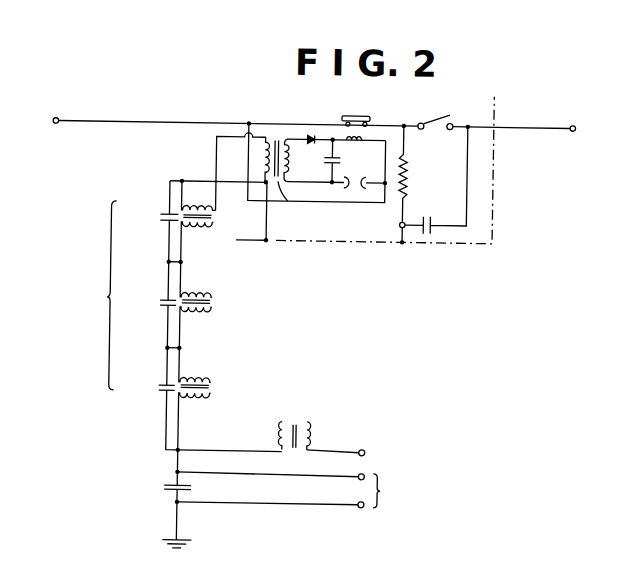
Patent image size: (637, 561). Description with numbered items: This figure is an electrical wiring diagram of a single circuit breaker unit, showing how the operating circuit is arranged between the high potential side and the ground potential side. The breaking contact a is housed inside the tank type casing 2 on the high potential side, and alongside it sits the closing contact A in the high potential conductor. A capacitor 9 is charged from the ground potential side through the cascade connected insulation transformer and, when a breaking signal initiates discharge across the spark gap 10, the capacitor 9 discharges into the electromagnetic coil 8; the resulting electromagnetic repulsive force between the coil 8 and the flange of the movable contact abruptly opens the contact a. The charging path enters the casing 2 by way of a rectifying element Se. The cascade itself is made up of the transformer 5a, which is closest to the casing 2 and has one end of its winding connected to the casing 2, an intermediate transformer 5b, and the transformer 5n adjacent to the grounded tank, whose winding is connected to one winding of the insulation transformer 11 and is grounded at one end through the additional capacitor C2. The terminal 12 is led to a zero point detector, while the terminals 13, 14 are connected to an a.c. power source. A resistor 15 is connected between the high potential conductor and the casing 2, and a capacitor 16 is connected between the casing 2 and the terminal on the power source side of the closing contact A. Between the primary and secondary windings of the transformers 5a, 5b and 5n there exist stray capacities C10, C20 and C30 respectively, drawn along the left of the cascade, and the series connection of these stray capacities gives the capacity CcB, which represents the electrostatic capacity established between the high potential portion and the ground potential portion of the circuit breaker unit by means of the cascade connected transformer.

The selenium rectifier Se is at (308, 134).
The contact a is at (356, 106).
The closing contact A is at (450, 105).
The capacitor 9 is at (318, 161).
The electromagnetic coil 8 is at (352, 146).
The spark gap 10 is at (360, 184).
The terminal 12 is at (297, 227).
The resistor 15 is at (414, 171).
The capacitor 16 is at (430, 210).
The casing 2 is at (404, 240).
The transformer 5a is at (217, 218).
The transformer 5b is at (215, 302).
The transformer 5n is at (215, 388).
The stray capacity C10 is at (151, 218).
The stray capacity C20 is at (149, 305).
The stray capacity C30 is at (145, 393).
The capacity CcB is at (80, 295).
The insulation transformer 11 is at (311, 413).
The terminal 13 is at (369, 457).
The terminal 14 is at (369, 457).
The additional capacitor C2 is at (168, 488).